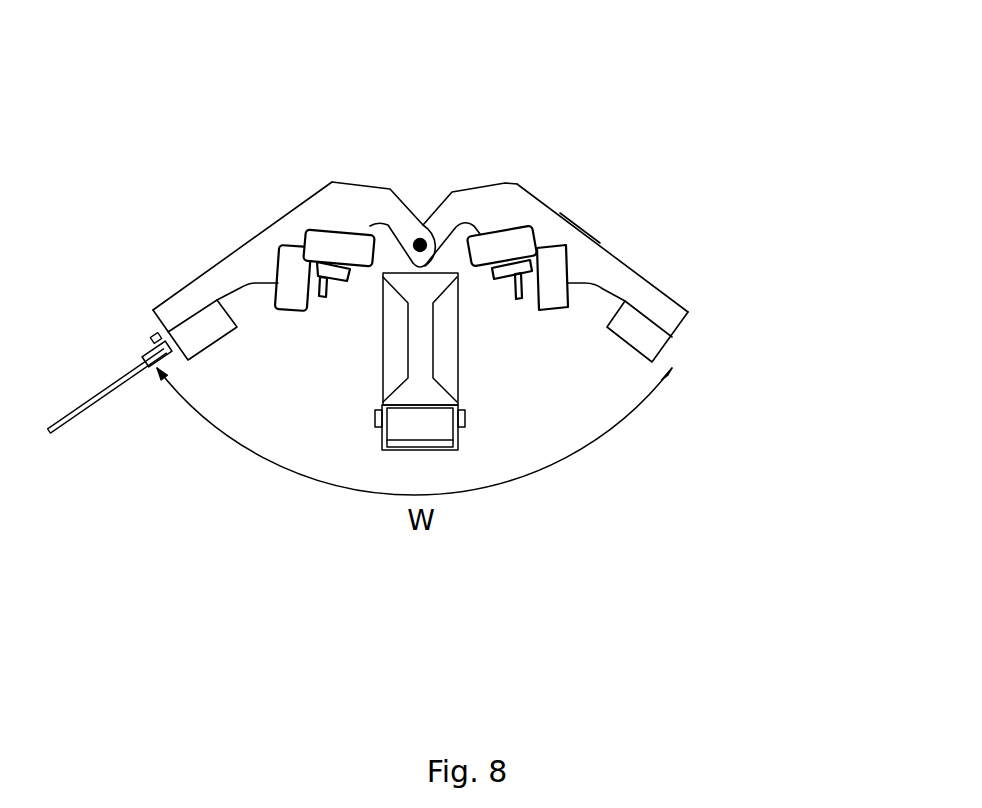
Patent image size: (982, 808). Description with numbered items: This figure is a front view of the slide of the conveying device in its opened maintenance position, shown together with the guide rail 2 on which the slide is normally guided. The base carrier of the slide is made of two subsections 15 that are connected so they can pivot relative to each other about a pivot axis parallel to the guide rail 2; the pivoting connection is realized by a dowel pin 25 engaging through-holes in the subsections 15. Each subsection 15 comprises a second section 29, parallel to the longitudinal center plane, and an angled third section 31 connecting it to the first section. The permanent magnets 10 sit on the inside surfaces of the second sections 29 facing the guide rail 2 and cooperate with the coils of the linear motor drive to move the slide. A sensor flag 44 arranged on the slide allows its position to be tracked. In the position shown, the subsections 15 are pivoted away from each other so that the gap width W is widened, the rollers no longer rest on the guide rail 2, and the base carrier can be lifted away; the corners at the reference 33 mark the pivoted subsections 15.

The guide rail 2 is at (425, 335).
The permanent magnets 10 is at (202, 352).
The subsections 15 is at (288, 218).
The dowel pin 25 is at (423, 225).
The second section 29 is at (560, 213).
The third section 31 is at (505, 197).
The hinge joint 33 is at (230, 300).
The sensor flag 44 is at (98, 390).